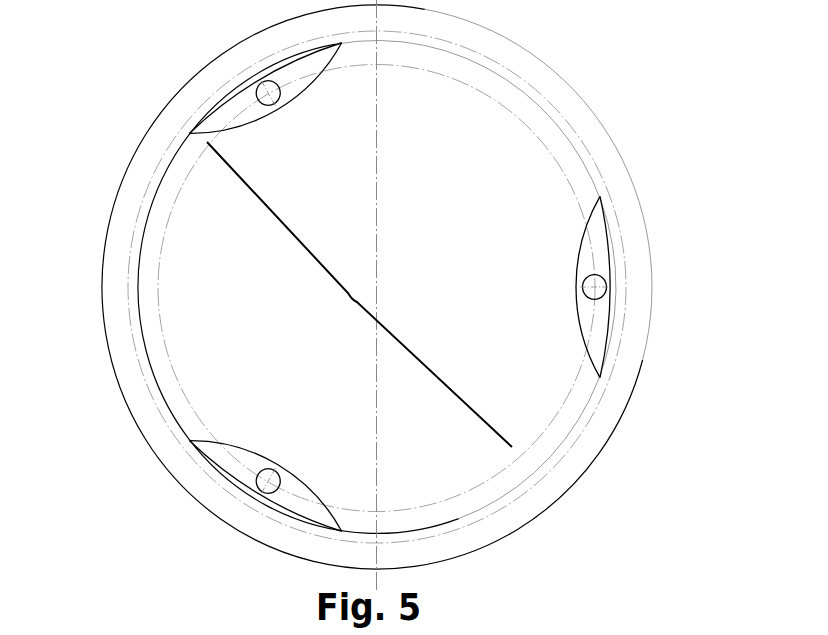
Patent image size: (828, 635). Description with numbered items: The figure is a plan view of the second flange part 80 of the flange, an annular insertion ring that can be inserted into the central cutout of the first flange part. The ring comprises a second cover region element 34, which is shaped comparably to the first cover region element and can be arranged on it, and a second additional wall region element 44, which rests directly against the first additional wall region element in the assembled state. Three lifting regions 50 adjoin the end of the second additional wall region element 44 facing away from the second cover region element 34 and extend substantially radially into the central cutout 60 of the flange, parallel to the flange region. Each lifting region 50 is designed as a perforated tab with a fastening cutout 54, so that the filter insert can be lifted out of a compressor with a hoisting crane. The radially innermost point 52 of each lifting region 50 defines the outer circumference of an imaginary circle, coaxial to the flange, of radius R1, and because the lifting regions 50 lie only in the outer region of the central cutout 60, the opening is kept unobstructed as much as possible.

The second flange part 80 is at (373, 295).
The second cover region element 34 is at (406, 26).
The second additional wall region element 44 is at (152, 332).
The lifting region 50 is at (293, 65).
The radially innermost point of the lifting region 52 is at (277, 108).
The fastening cutout 54 is at (262, 88).
The central cutout 60 is at (359, 294).
The radius of imaginary circle R1 is at (574, 280).